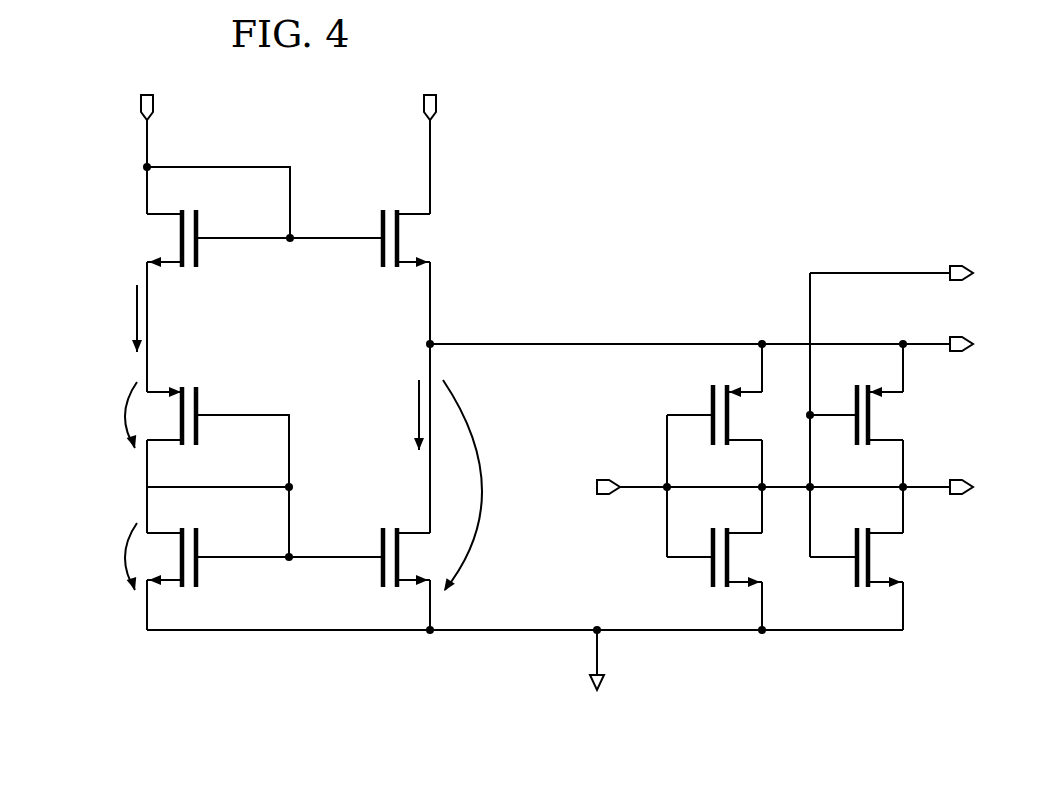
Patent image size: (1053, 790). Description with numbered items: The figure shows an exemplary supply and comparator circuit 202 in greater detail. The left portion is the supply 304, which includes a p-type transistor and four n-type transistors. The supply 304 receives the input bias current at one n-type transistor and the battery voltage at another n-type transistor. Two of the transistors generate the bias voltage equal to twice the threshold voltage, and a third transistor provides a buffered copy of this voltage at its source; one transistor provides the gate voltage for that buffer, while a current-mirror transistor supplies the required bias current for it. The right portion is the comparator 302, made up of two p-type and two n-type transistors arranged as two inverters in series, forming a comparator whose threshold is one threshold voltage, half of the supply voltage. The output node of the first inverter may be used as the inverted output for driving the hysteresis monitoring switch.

The supply and comparator circuit 202 is at (559, 396).
The comparator 302 is at (810, 642).
The supply 304 is at (277, 642).